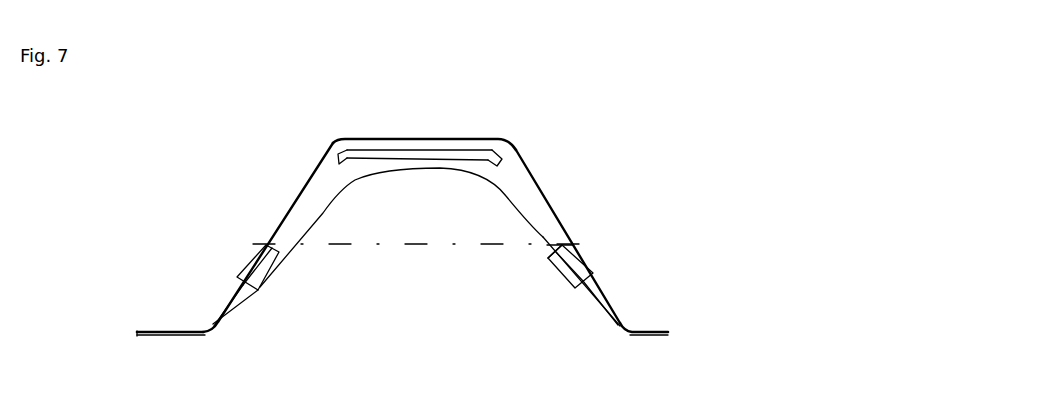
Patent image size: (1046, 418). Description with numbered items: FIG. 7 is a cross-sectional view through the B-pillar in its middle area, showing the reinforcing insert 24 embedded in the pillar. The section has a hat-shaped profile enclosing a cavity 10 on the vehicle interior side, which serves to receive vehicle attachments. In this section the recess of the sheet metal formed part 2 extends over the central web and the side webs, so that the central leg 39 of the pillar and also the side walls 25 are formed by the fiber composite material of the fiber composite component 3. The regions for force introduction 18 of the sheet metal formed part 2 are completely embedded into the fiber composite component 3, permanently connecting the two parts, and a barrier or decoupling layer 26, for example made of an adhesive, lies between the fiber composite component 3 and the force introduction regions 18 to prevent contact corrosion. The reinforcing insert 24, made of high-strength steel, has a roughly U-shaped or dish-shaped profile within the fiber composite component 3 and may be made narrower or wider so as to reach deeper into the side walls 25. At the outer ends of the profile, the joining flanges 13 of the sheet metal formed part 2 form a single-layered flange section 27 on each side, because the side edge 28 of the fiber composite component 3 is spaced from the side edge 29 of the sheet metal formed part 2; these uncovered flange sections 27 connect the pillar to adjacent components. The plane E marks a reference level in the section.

The sheet metal formed part 2 is at (217, 324).
The fiber composite component 3 is at (391, 138).
The cavity 10 is at (427, 295).
The joining flanges 13 is at (653, 331).
The regions for force introduction 18 is at (565, 250).
The reinforcing insert 24 is at (502, 137).
The side walls 25 is at (544, 190).
The barrier or decoupling layer 26 is at (563, 253).
The single-layered flange section 27 is at (175, 331).
The side edge of the fiber composite component 28 is at (237, 277).
The side edge of the sheet metal formed part 29 is at (137, 332).
The central leg 39 is at (441, 135).
The plane E is at (581, 235).